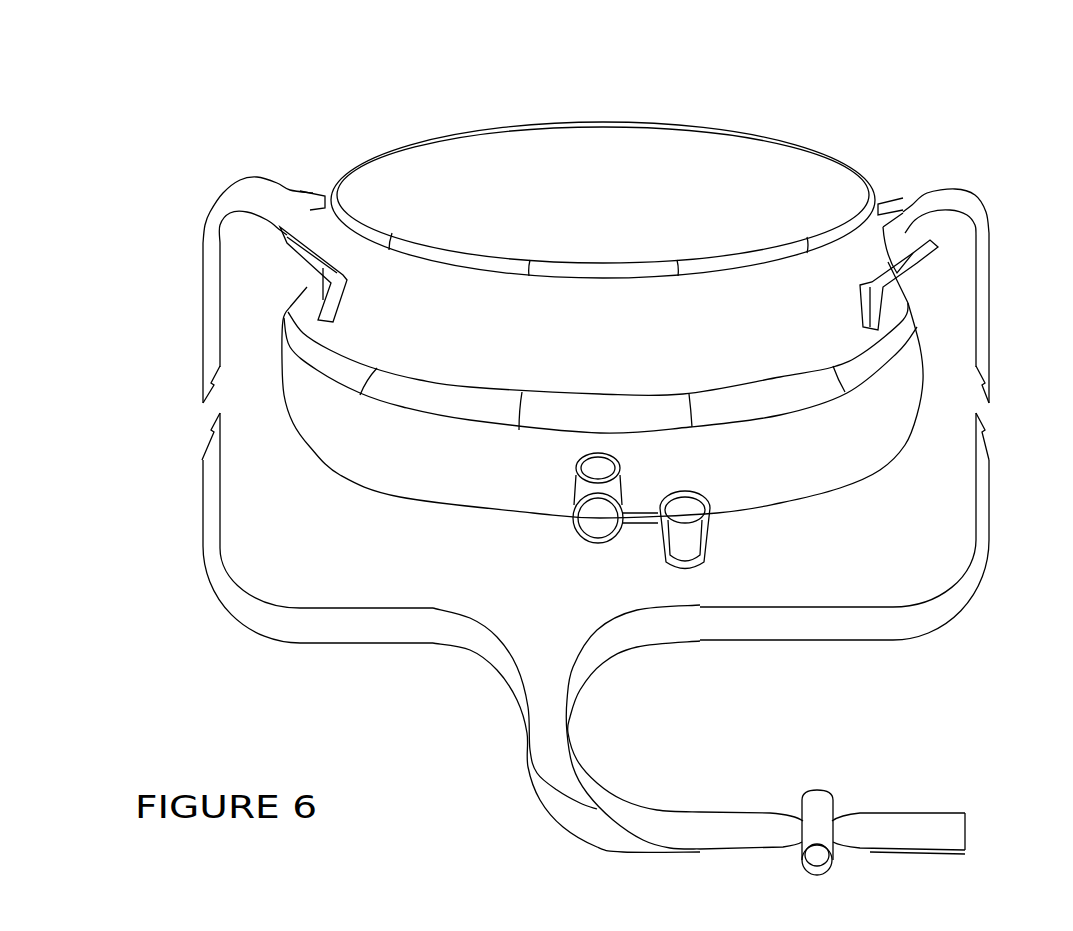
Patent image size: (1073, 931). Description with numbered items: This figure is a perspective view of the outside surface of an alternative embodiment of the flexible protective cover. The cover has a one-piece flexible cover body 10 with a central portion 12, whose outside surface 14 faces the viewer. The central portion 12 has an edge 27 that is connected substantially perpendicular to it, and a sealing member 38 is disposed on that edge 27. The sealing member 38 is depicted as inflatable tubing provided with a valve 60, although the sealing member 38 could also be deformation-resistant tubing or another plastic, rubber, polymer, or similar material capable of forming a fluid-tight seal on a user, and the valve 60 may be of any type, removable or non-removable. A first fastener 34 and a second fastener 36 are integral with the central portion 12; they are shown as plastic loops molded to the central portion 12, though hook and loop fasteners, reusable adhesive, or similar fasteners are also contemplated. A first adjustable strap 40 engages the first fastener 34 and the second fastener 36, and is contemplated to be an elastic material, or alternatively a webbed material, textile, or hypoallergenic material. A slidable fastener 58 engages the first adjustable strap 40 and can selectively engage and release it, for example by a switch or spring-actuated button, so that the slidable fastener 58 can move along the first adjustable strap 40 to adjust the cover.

The flexible cover body 10 is at (747, 83).
The central portion 12 is at (492, 168).
The outside surface 14 is at (373, 233).
The edge 27 is at (492, 337).
The first fastener 34 is at (897, 200).
The second fastener 36 is at (310, 190).
The sealing member 38 is at (813, 457).
The first adjustable strap 40 is at (955, 607).
The slidable fastener 58 is at (817, 803).
The valve 60 is at (597, 523).